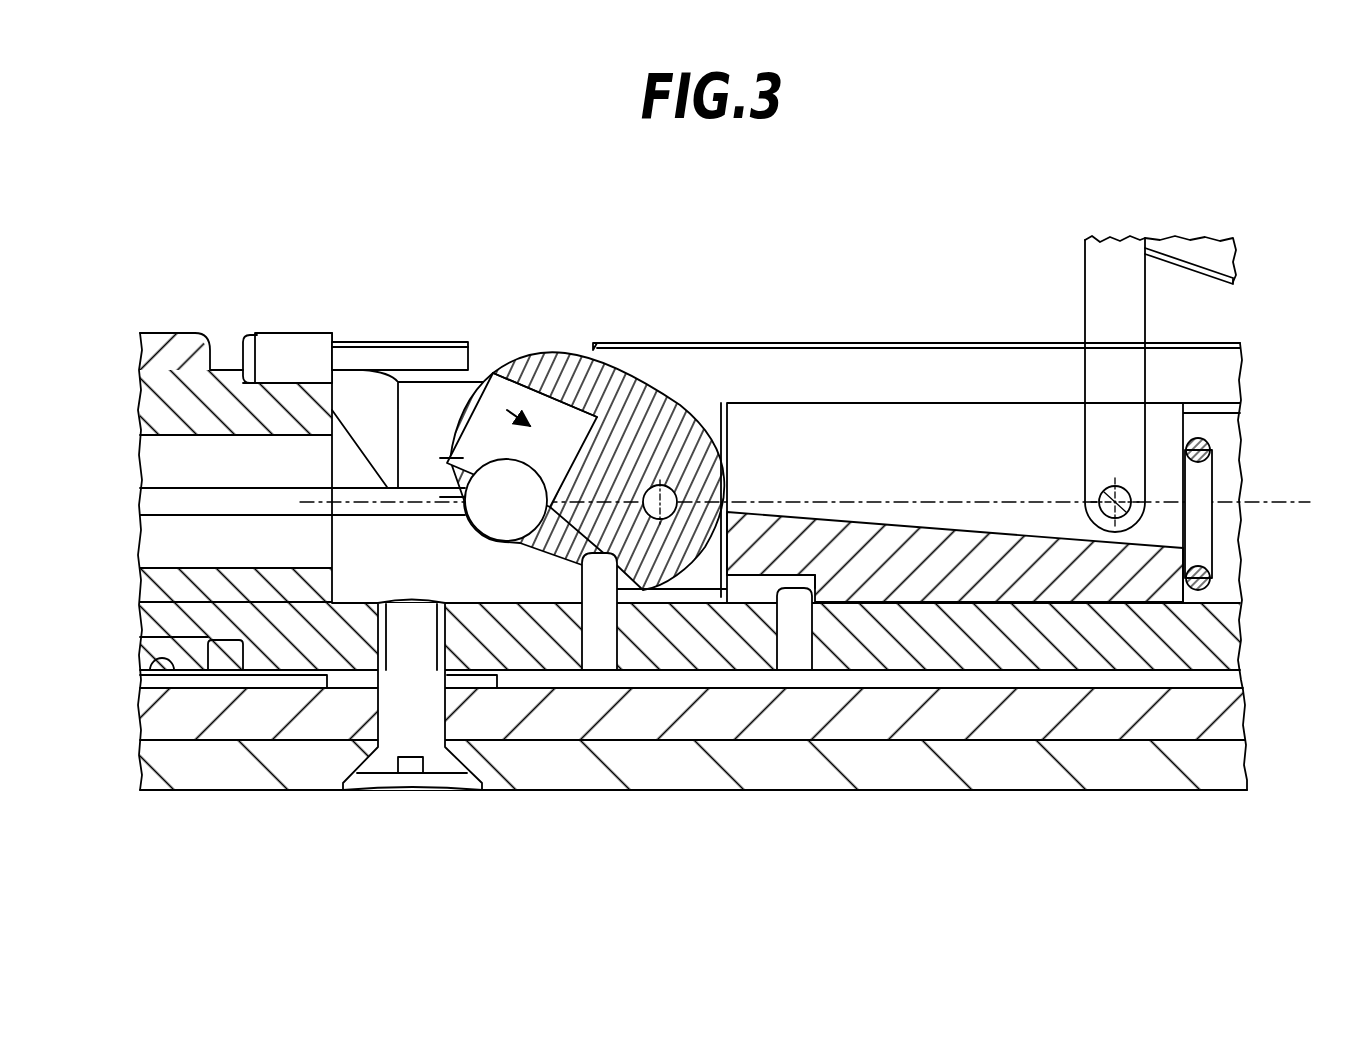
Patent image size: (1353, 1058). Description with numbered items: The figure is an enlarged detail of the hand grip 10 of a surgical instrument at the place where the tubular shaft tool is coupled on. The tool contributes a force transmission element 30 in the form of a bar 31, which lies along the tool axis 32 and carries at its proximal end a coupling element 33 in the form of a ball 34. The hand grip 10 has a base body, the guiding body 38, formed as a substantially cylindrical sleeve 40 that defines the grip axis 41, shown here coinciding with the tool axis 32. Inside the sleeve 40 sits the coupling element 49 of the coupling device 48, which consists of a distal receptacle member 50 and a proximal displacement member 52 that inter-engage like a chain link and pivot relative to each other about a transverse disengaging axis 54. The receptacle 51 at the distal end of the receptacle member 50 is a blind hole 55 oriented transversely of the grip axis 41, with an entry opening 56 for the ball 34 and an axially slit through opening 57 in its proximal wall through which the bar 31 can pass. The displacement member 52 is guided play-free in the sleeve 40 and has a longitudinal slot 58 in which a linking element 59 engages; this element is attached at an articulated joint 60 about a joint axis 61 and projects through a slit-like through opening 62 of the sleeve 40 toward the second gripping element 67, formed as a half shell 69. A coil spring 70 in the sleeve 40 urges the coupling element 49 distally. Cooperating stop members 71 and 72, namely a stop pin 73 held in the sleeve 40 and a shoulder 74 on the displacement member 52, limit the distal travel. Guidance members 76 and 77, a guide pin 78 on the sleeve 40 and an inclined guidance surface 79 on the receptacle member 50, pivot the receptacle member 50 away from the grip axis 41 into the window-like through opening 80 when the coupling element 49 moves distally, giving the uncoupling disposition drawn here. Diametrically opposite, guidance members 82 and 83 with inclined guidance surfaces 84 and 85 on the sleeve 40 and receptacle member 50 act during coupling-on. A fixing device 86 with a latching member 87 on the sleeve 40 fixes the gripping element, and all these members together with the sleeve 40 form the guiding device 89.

The hand grip 10 is at (215, 191).
The force transmission element 30 is at (180, 490).
The bar 31 is at (162, 518).
The tool axis 32 is at (320, 495).
The coupling element 33 is at (495, 520).
The ball 34 is at (525, 520).
The guiding body 38 is at (1115, 640).
The sleeve 40 is at (1070, 650).
The grip axis 41 is at (1277, 502).
The coupling device 48 is at (556, 342).
The coupling element 49 is at (798, 432).
The receptacle member 50 is at (670, 428).
The receptacle 51 is at (535, 372).
The displacement member 52 is at (915, 570).
The disengaging axis 54 is at (668, 495).
The blind hole 55 is at (530, 358).
The entry opening 56 is at (455, 490).
The through opening 57 is at (482, 430).
The longitudinal slot 58 is at (946, 432).
The linking element 59 is at (1118, 297).
The articulated joint 60 is at (1126, 514).
The joint axis 61 is at (1108, 490).
The through opening 62 is at (1212, 378).
The second gripping element 67 is at (942, 782).
The half shell 69 is at (996, 782).
The coil spring 70 is at (1212, 582).
The stop member 71 is at (810, 620).
The stop member 72 is at (795, 578).
The stop pin 73 is at (778, 628).
The shoulder 74 is at (808, 590).
The guidance member 76 is at (548, 545).
The guidance member 77 is at (528, 557).
The guide pin 78 is at (595, 563).
The guidance surface 79 is at (433, 790).
The through opening 80 is at (438, 360).
The guidance member 82 is at (595, 405).
The guidance member 83 is at (595, 405).
The guidance surface 84 is at (635, 405).
The guidance surface 85 is at (635, 405).
The fixing device 86 is at (327, 326).
The latching member 87 is at (376, 360).
The guiding device 89 is at (840, 634).